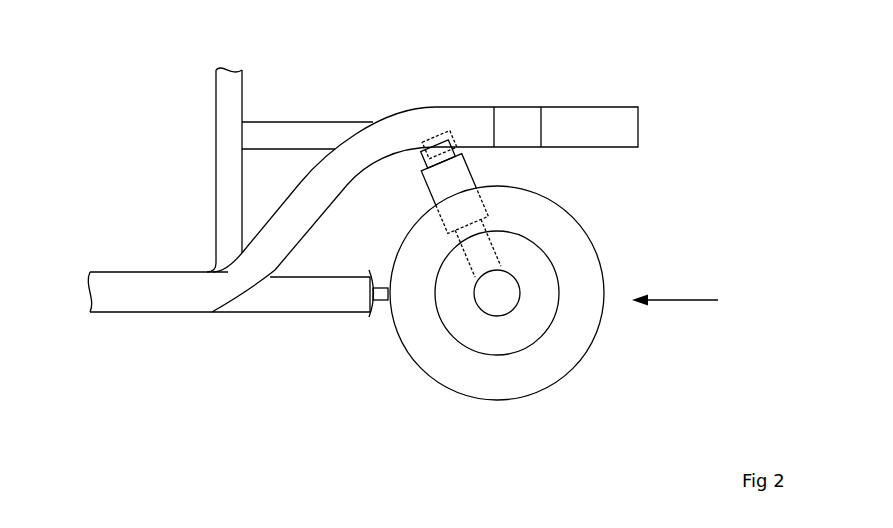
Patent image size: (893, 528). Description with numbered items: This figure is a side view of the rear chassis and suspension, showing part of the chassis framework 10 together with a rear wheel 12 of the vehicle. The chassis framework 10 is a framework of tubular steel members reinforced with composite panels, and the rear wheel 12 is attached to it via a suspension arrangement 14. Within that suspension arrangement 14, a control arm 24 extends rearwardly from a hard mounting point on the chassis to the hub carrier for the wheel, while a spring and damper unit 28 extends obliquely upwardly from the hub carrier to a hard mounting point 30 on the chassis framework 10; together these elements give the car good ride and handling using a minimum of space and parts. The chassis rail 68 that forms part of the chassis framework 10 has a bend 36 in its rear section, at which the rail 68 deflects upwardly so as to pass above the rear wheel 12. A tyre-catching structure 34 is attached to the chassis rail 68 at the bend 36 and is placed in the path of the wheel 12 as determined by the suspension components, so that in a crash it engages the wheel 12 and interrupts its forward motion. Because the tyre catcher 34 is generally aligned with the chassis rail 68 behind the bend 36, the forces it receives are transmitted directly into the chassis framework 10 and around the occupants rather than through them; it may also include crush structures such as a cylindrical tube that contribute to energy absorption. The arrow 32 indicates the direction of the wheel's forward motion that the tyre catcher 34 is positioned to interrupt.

The chassis framework 10 is at (156, 270).
The rear wheel 12 is at (490, 382).
The suspension arrangement 14 is at (478, 172).
The control arm 24 is at (382, 300).
The spring and damper unit 28 is at (488, 204).
The hard mounting point 30 is at (433, 142).
The direction of travel 32 is at (675, 292).
The tyre-catching structure 34 is at (307, 313).
The bend 36 is at (228, 292).
The chassis rail 68 is at (173, 297).